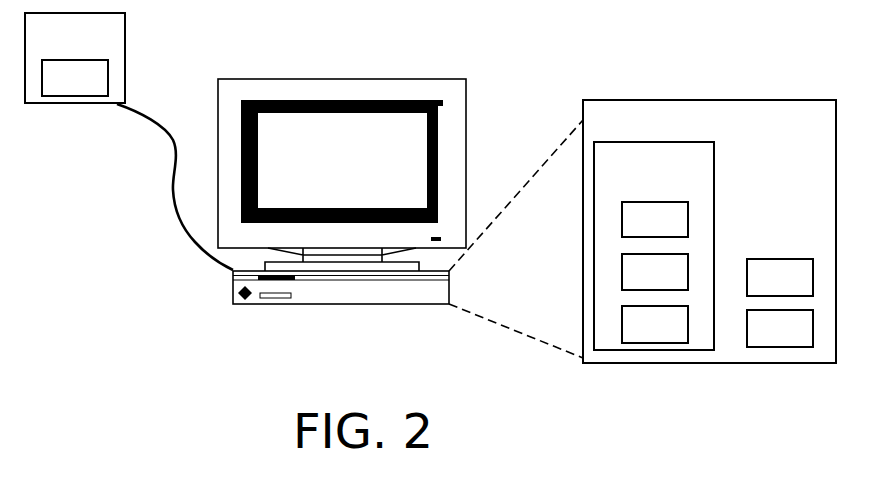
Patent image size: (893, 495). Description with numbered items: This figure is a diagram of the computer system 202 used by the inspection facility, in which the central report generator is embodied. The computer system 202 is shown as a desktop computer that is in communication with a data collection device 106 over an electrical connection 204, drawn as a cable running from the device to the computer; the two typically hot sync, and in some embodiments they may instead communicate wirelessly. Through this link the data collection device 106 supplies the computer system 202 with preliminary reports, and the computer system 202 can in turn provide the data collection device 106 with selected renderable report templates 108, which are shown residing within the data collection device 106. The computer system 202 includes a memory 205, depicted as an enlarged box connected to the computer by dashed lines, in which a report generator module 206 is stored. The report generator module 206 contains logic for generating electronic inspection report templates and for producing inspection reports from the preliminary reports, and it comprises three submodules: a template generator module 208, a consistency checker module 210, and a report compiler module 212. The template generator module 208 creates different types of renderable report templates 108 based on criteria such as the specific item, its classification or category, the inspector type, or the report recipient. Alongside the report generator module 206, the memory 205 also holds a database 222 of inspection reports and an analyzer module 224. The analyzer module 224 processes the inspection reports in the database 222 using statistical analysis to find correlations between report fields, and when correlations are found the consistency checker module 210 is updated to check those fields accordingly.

The data collection device 106 is at (59, 51).
The renderable report templates 108 is at (59, 91).
The computer system 202 is at (328, 171).
The electrical connection 204 is at (178, 227).
The memory 205 is at (690, 131).
The report generator module 206 is at (636, 176).
The template generator module 208 is at (636, 231).
The consistency checker module 210 is at (636, 283).
The report compiler module 212 is at (636, 336).
The database 222 is at (762, 289).
The analyzer module 224 is at (762, 340).